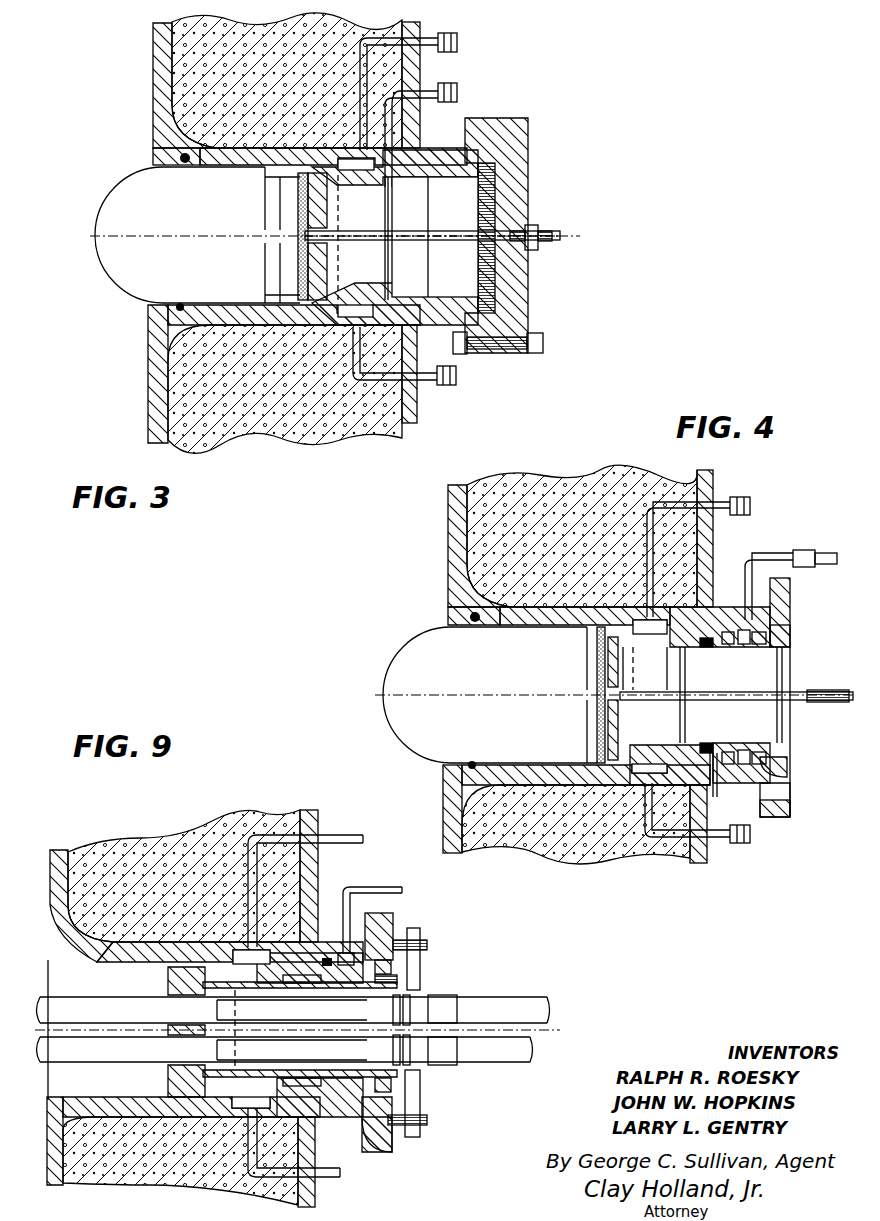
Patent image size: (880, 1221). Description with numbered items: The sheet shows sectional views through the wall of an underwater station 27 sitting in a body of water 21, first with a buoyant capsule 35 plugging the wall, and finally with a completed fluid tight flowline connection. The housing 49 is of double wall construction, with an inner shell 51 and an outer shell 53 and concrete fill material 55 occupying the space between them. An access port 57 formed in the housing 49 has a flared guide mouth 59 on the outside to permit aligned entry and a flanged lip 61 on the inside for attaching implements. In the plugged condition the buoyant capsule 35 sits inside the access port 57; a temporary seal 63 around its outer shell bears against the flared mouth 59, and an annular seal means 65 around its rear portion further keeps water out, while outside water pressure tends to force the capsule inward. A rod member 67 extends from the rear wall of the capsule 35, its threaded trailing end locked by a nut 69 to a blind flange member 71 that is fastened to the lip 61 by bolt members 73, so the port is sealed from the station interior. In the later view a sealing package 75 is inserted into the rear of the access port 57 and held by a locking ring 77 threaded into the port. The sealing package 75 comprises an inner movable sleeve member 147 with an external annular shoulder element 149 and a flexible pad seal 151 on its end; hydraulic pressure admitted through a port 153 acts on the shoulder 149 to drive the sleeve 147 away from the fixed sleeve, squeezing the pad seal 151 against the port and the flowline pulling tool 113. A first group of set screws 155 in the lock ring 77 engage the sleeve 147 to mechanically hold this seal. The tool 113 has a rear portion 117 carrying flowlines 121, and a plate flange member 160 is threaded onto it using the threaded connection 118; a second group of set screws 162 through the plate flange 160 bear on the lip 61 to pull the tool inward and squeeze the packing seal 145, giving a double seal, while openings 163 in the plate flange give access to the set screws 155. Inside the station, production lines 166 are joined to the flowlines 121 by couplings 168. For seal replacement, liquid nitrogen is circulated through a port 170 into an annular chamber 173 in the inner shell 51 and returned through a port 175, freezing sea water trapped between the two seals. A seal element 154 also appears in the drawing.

In FIG. 3, the body of water 21 is at (94, 358).
In FIG. 4, the body of water 21 is at (388, 577).
In FIG. 3, the underwater station 27 is at (545, 94).
In FIG. 4, the underwater station 27 is at (777, 878).
In FIG. 9, the underwater station 27 is at (569, 1018).
In FIG. 3, the buoyant capsule 35 is at (335, 235).
In FIG. 4, the buoyant capsule 35 is at (614, 695).
In FIG. 3, the housing 49 is at (310, 440).
In FIG. 4, the housing 49 is at (668, 862).
In FIG. 9, the housing 49 is at (220, 808).
In FIG. 3, the inner shell 51 is at (405, 425).
In FIG. 4, the inner shell 51 is at (700, 865).
In FIG. 9, the inner shell 51 is at (308, 810).
In FIG. 3, the outer shell 53 is at (148, 425).
In FIG. 4, the outer shell 53 is at (448, 542).
In FIG. 9, the outer shell 53 is at (60, 848).
In FIG. 3, the concrete fill material 55 is at (245, 426).
In FIG. 4, the concrete fill material 55 is at (565, 478).
In FIG. 9, the concrete fill material 55 is at (140, 845).
In FIG. 3, the access port 57 is at (408, 237).
In FIG. 4, the access port 57 is at (654, 695).
In FIG. 9, the access port 57 is at (165, 972).
In FIG. 3, the flared guide mouth 59 is at (153, 140).
In FIG. 4, the flared guide mouth 59 is at (450, 596).
In FIG. 9, the flared guide mouth 59 is at (52, 925).
In FIG. 3, the flanged lip 61 is at (486, 116).
In FIG. 4, the flanged lip 61 is at (782, 816).
In FIG. 9, the flanged lip 61 is at (395, 918).
In FIG. 3, the temporary seal 63 is at (178, 310).
In FIG. 4, the temporary seal 63 is at (468, 768).
In FIG. 3, the annular seal means 65 is at (300, 185).
In FIG. 4, the annular seal means 65 is at (597, 658).
In FIG. 3, the rod member 67 is at (458, 218).
In FIG. 4, the rod member 67 is at (748, 700).
In FIG. 3, the nut 69 is at (538, 226).
In FIG. 3, the blind flange member 71 is at (530, 272).
In FIG. 3, the bolt members 73 is at (535, 354).
In FIG. 4, the sealing package 75 is at (765, 648).
In FIG. 9, the sealing package 75 is at (340, 1100).
In FIG. 4, the locking ring 77 is at (795, 635).
In FIG. 9, the locking ring 77 is at (392, 967).
In FIG. 9, the flowline pulling tool 113 is at (158, 1089).
In FIG. 9, the rear portion 117 is at (160, 1077).
In FIG. 9, the threaded connection 118 is at (430, 1030).
In FIG. 9, the flowlines 121 is at (98, 1005).
In FIG. 9, the packing seal 145 is at (168, 985).
In FIG. 4, the inner movable sleeve member 147 is at (732, 750).
In FIG. 9, the inner movable sleeve member 147 is at (327, 958).
In FIG. 4, the external annular shoulder element 149 is at (730, 630).
In FIG. 9, the external annular shoulder element 149 is at (352, 893).
In FIG. 4, the pad seal 151 is at (720, 760).
In FIG. 9, the pad seal 151 is at (325, 950).
In FIG. 3, the port 153 is at (441, 90).
In FIG. 4, the port 153 is at (762, 556).
In FIG. 9, the port 153 is at (403, 890).
In FIG. 4, the seal 154 is at (792, 770).
In FIG. 9, the seal 154 is at (392, 1128).
In FIG. 9, the set screws 155 is at (398, 979).
In FIG. 9, the plate flange member 160 is at (421, 932).
In FIG. 9, the set screws 162 is at (422, 945).
In FIG. 9, the openings 163 is at (395, 1086).
In FIG. 9, the production lines 166 is at (505, 997).
In FIG. 9, the couplings 168 is at (462, 995).
In FIG. 3, the port 170 is at (449, 32).
In FIG. 4, the port 170 is at (745, 504).
In FIG. 9, the port 170 is at (340, 835).
In FIG. 3, the annular chamber 173 is at (356, 170).
In FIG. 4, the annular chamber 173 is at (655, 618).
In FIG. 9, the annular chamber 173 is at (245, 1108).
In FIG. 3, the port 175 is at (440, 387).
In FIG. 4, the port 175 is at (733, 846).
In FIG. 9, the port 175 is at (340, 1178).